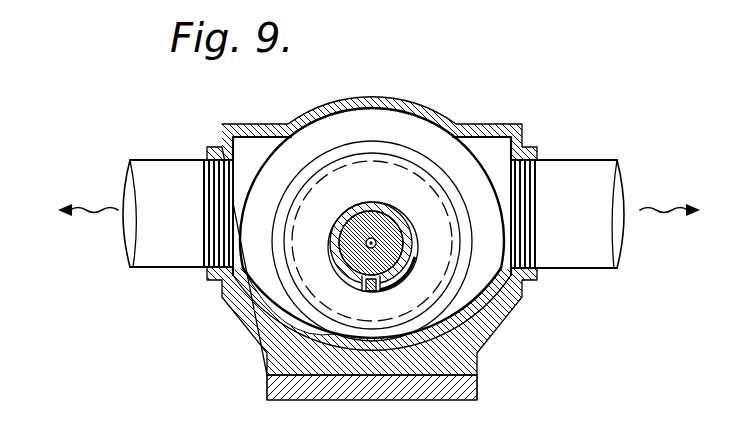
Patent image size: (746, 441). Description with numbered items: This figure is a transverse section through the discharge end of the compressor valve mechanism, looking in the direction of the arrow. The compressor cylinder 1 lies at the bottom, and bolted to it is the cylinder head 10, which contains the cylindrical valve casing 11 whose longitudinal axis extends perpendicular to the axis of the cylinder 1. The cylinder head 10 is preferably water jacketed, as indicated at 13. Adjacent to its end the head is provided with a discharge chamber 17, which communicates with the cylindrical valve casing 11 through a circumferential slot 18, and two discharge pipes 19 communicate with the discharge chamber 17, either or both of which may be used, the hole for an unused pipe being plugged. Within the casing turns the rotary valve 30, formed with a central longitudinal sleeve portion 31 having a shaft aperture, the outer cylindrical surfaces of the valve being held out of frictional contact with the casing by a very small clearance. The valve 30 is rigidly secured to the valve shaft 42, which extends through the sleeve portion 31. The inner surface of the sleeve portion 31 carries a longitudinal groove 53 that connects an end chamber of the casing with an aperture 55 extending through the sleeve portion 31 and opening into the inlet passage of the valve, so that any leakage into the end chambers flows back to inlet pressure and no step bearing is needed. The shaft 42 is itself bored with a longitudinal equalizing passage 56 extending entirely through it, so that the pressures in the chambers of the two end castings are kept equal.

The compressor cylinder 1 is at (478, 388).
The cylinder head 10 is at (418, 114).
The cylindrical valve casing 11 is at (372, 150).
The water jacket 13 is at (277, 320).
The discharge chamber 17 is at (332, 114).
The circumferential slot 18 is at (431, 163).
The discharge pipes 19 is at (156, 170).
The rotary valve 30 is at (327, 190).
The sleeve portion 31 is at (358, 208).
The valve shaft 42 is at (345, 248).
The longitudinal groove 53 is at (396, 270).
The aperture 55 is at (370, 292).
The equalizing passage 56 is at (372, 243).